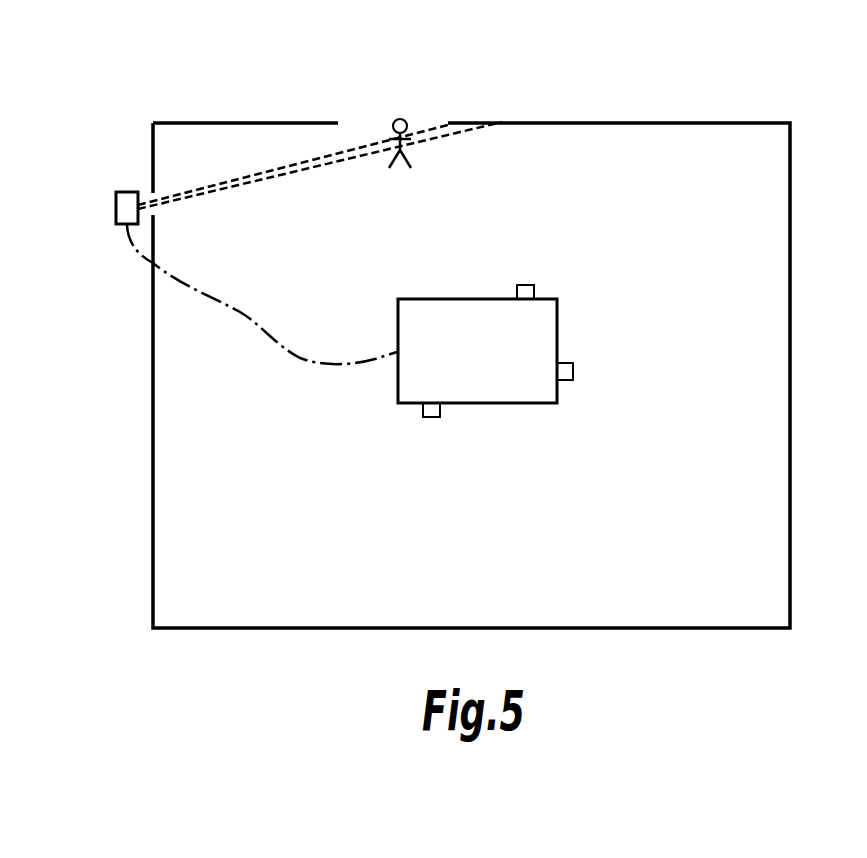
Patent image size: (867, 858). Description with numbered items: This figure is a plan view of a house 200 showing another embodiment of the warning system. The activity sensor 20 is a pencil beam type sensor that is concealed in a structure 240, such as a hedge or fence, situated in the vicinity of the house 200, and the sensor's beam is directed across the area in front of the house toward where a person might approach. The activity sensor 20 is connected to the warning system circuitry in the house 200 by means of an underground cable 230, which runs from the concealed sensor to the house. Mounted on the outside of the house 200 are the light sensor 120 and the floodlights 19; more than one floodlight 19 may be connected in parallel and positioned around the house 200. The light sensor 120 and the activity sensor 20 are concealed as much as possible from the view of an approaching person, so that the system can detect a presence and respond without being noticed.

The structure 240 is at (720, 121).
The activity sensor 20 is at (115, 207).
The underground cable 230 is at (250, 313).
The house 200 is at (512, 404).
The floodlight 19 is at (525, 285).
The light sensor 120 is at (432, 420).